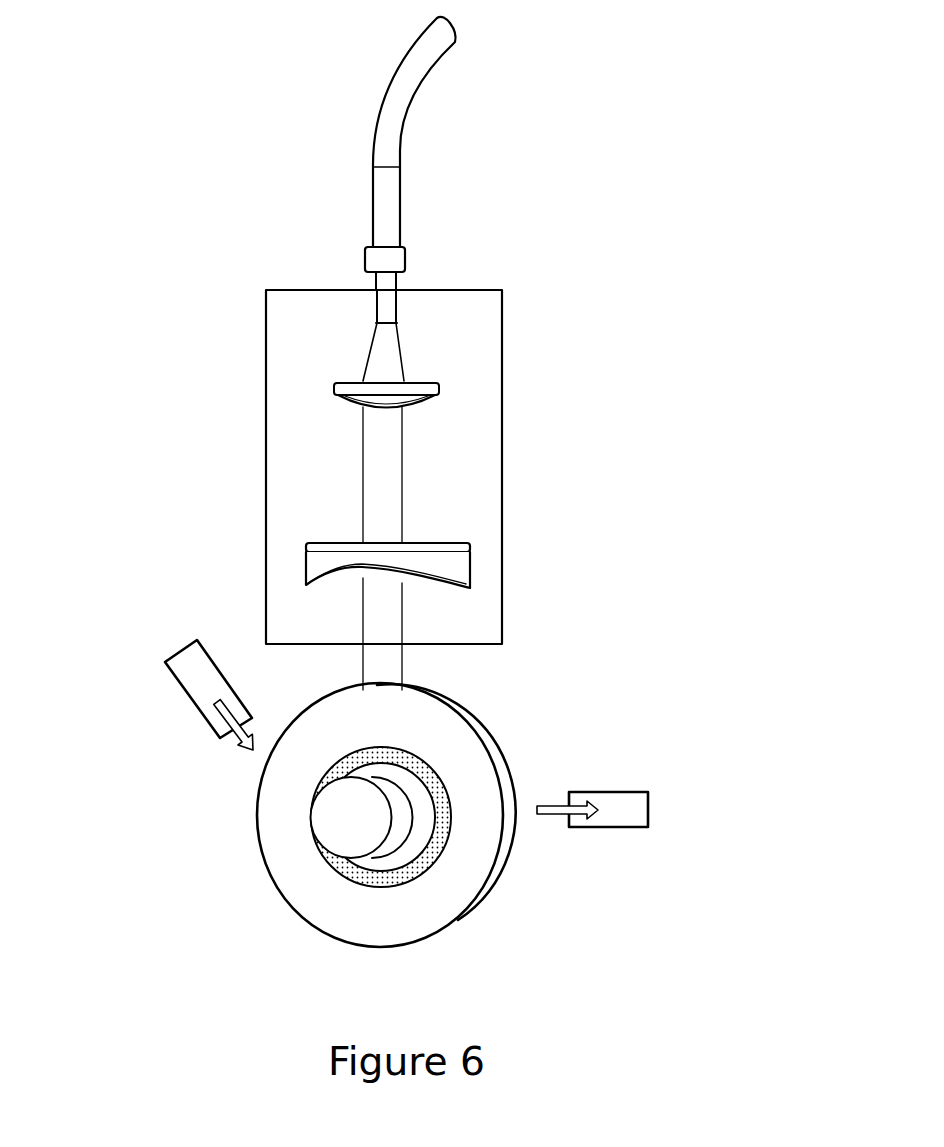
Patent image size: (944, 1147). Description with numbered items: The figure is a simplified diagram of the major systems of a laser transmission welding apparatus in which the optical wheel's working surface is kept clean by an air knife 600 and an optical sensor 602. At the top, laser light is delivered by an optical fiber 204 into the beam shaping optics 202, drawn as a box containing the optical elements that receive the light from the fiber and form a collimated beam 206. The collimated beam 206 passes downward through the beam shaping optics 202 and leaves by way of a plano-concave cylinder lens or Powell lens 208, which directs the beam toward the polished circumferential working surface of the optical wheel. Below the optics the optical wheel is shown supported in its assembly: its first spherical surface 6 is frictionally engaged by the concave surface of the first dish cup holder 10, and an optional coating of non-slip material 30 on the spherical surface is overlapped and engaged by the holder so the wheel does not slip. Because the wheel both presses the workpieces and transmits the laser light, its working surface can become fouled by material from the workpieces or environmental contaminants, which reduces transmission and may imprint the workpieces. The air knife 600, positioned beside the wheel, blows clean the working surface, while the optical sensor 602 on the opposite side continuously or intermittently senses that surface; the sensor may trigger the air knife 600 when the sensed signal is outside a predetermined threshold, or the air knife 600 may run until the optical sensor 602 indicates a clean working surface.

The optical fiber 204 is at (420, 138).
The beam shaping optics 202 is at (595, 405).
The collimated beam 206 is at (326, 478).
The Powell lens 208 is at (482, 578).
The first spherical surface 6 is at (325, 883).
The non-slip material 30 is at (442, 792).
The first dish cup holder 10 is at (413, 840).
The air knife 600 is at (157, 688).
The optical sensor 602 is at (657, 784).